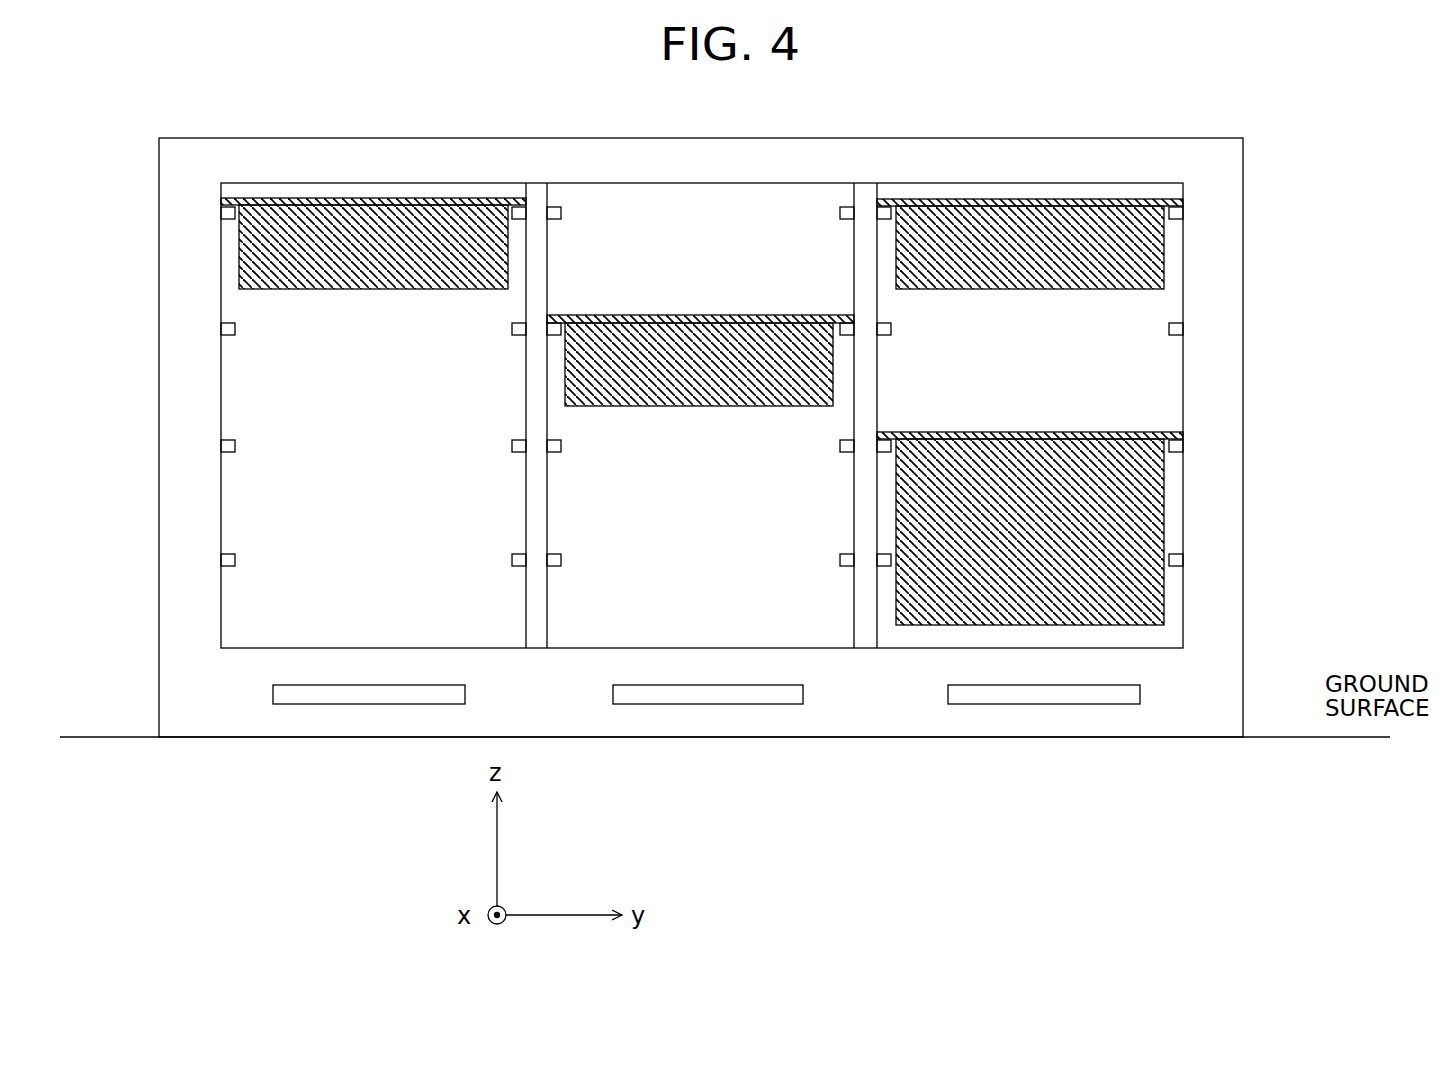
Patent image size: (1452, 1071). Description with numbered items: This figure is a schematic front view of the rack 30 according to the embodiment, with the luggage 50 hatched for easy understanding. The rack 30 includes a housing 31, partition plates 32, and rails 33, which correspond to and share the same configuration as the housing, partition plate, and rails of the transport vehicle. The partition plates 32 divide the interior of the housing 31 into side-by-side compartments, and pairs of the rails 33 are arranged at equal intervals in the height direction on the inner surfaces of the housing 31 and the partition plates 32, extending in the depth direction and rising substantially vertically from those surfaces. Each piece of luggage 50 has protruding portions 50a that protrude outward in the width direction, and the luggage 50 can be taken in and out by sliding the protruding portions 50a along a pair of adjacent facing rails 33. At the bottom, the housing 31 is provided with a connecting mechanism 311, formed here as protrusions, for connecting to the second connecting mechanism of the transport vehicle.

The rack 30 is at (115, 84).
The housing 31 is at (248, 162).
The partition plates 32 is at (537, 198).
The rails 33 is at (236, 329).
The luggage 50 is at (635, 395).
The protruding portion 50a is at (223, 203).
The connecting mechanism 311 is at (806, 690).